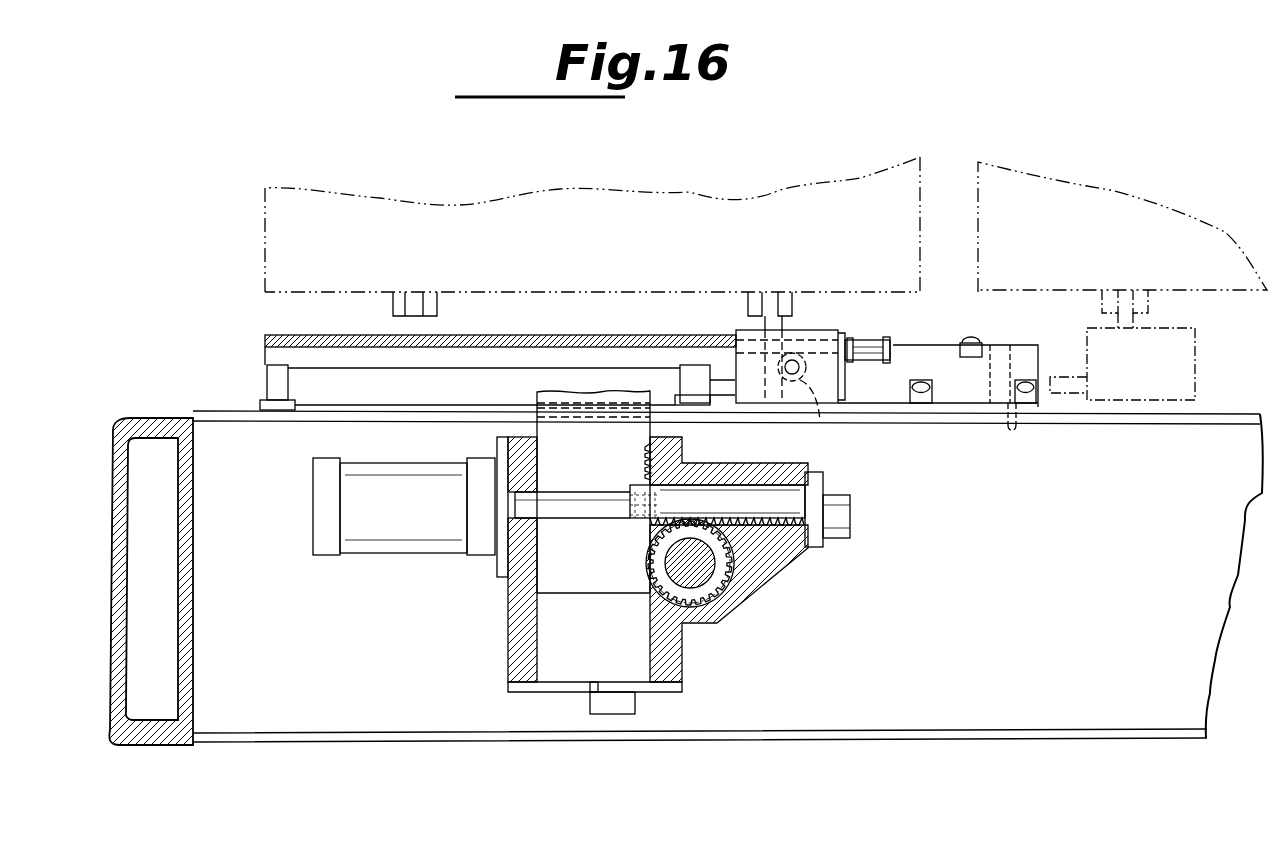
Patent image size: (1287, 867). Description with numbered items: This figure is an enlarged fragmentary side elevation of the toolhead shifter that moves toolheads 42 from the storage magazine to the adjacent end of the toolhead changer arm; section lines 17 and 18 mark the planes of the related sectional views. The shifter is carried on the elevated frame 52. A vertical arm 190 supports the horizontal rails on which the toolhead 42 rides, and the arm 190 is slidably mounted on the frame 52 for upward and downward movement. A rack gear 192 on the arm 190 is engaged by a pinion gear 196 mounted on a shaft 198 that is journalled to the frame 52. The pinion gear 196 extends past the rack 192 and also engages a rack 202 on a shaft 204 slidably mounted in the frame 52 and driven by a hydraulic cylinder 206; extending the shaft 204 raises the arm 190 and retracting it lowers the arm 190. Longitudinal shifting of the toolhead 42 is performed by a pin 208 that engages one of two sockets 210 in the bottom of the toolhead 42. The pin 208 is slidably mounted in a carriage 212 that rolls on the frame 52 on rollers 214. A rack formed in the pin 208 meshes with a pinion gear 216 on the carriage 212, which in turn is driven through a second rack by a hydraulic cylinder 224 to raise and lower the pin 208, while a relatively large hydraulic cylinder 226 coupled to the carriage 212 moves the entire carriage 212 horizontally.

The section line 17- 17 is at (628, 155).
The section line 18- 18 is at (722, 320).
The toolhead 42 is at (796, 200).
The frame 52 is at (222, 412).
The vertical arm 190 is at (600, 458).
The rack gear 192 is at (648, 462).
The pinion gear 196 is at (728, 575).
The shaft 198 is at (697, 575).
The rack 202 is at (760, 495).
The shaft 204 is at (595, 517).
The hydraulic cylinder 206 is at (400, 522).
The pin 208 is at (782, 331).
The socket 210 is at (418, 310).
The carriage 212 is at (832, 375).
The rollers 214 is at (975, 345).
The pinion gear 216 is at (822, 420).
The hydraulic cylinder 224 is at (870, 345).
The hydraulic cylinder 226 is at (348, 385).